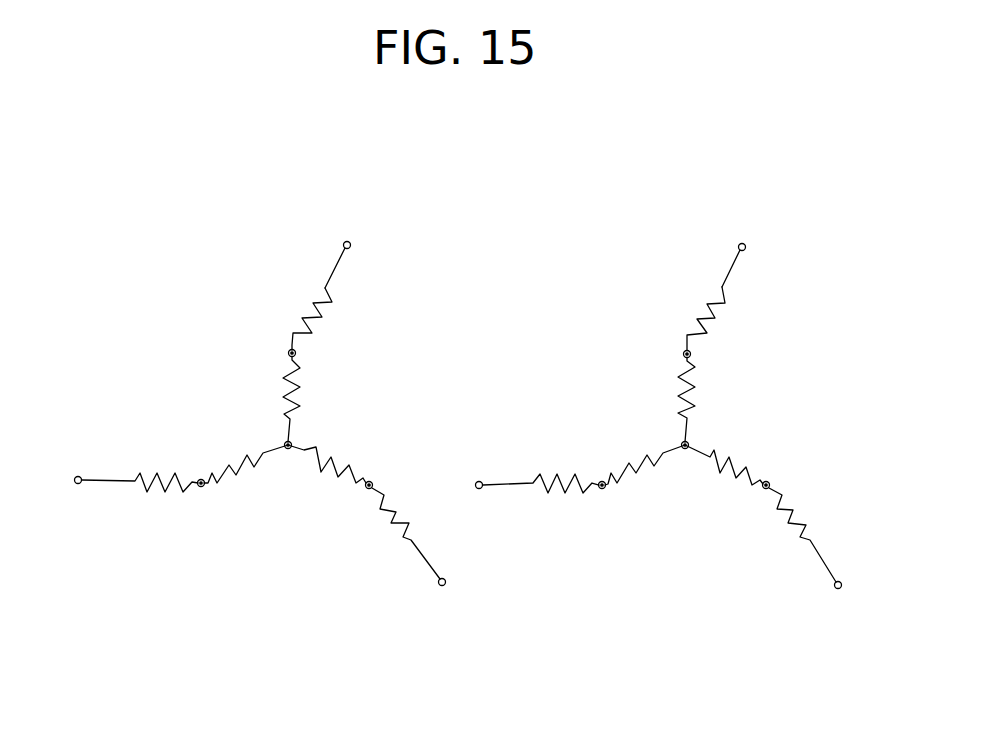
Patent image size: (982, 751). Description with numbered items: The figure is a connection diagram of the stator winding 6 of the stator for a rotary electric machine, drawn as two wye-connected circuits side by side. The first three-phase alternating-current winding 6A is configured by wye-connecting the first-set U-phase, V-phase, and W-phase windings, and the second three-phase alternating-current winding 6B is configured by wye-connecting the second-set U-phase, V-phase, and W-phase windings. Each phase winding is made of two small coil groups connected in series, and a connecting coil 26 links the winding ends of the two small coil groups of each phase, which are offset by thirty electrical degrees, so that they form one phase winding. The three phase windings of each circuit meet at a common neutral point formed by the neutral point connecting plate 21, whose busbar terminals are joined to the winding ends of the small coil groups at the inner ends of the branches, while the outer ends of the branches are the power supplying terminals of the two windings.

The stator winding 6 is at (457, 189).
The first three-phase alternating-current winding 6A is at (273, 279).
The second three-phase alternating-current winding 6B is at (684, 269).
The neutral point connecting plate 21 is at (285, 443).
The connecting coil 26 is at (296, 354).